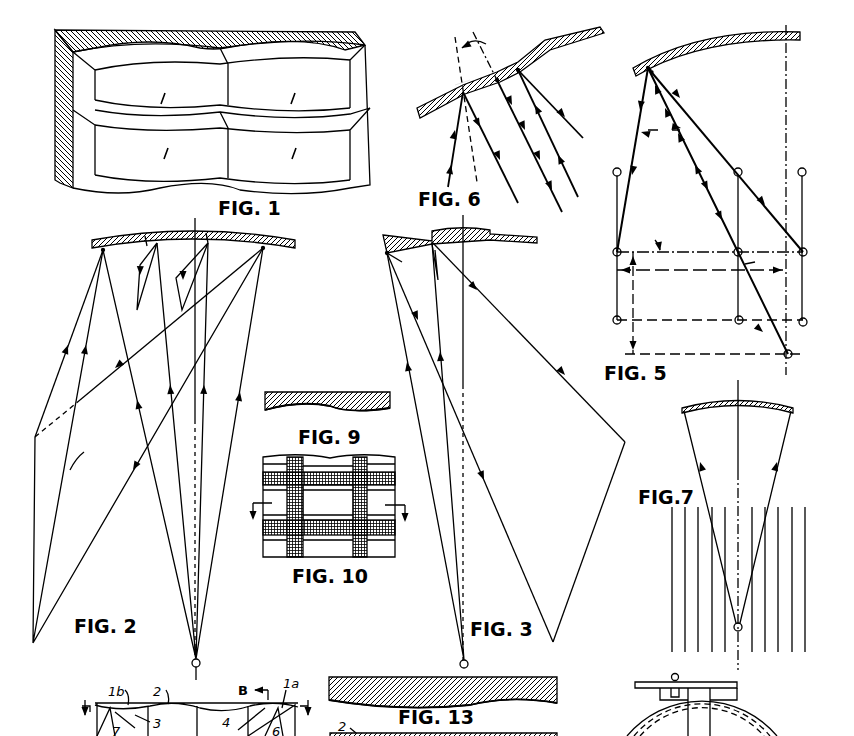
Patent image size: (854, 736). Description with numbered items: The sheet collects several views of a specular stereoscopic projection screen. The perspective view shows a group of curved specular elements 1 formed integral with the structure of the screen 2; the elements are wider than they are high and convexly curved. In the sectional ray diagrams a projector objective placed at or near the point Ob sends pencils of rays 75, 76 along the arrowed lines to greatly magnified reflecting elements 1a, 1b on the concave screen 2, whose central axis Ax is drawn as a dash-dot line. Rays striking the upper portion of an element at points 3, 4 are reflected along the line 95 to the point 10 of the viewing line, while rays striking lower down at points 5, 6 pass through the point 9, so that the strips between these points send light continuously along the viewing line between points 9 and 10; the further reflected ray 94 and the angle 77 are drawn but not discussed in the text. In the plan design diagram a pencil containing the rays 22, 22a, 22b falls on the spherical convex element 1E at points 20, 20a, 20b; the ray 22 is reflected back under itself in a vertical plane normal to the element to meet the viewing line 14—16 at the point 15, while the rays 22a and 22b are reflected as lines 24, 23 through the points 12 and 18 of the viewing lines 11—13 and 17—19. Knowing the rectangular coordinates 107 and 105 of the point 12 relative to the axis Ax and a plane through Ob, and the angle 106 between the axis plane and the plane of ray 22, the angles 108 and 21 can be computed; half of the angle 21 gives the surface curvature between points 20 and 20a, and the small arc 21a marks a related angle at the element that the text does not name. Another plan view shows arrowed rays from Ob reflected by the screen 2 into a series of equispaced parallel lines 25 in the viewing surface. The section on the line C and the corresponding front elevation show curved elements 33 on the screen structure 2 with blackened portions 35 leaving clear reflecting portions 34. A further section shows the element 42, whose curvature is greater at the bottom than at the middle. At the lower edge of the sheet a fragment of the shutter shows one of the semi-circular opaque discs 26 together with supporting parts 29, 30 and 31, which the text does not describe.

In FIG. 1, the curved specular element 1 is at (228, 126).
In FIG. 1, the screen 2 is at (58, 136).
In FIG. 6, the screen 2 is at (433, 100).
In FIG. 5, the screen 2 is at (705, 46).
In FIG. 2, the screen 2 is at (97, 240).
In FIG. 9, the screen 2 is at (356, 393).
In FIG. 3, the screen 2 is at (396, 234).
In FIG. 13, the screen 2 is at (380, 686).
In FIG. 7, the screen 2 is at (722, 414).
In FIG. 2, the curved reflecting element 1a is at (270, 252).
In FIG. 3, the curved reflecting element 1a is at (386, 256).
In FIG. 2, the curved reflecting element 1b is at (100, 252).
In FIG. 3, the curved reflecting element 1b is at (356, 297).
In FIG. 6, the element 1E is at (458, 88).
In FIG. 2, the point on upper portion of element 3 is at (133, 262).
In FIG. 3, the point on upper portion of element 3 is at (399, 255).
In FIG. 2, the point on upper portion of element 4 is at (246, 250).
In FIG. 3, the point on upper portion of element 4 is at (407, 269).
In FIG. 2, the point on lower portion of element 5 is at (121, 269).
In FIG. 3, the point on lower portion of element 5 is at (438, 262).
In FIG. 2, the point on lower portion of element 6 is at (237, 260).
In FIG. 3, the point on lower portion of element 6 is at (444, 281).
In FIG. 2, the point of viewing line 9 is at (34, 436).
In FIG. 3, the point of viewing line 9 is at (620, 442).
In FIG. 2, the point of viewing line 10 is at (33, 645).
In FIG. 3, the point of viewing line 10 is at (556, 642).
In FIG. 5, the central axis of the screen Ax is at (784, 100).
In FIG. 2, the central axis of the screen Ax is at (193, 346).
In FIG. 3, the central axis of the screen Ax is at (464, 364).
In FIG. 7, the central axis of the screen Ax is at (736, 458).
In FIG. 5, the projector objective point Ob is at (787, 358).
In FIG. 2, the projector objective point Ob is at (200, 662).
In FIG. 3, the projector objective point Ob is at (460, 661).
In FIG. 7, the projector objective point Ob is at (740, 632).
In FIG. 2, the pencil of rays 75 is at (138, 406).
In FIG. 2, the pencil of rays 76 is at (246, 354).
In FIG. 2, the angle between rays 77 is at (83, 460).
In FIG. 3, the ray to focal point 9 94 is at (554, 365).
In FIG. 3, the reflected ray line 95 is at (502, 514).
In FIG. 5, the viewing line end point 11 is at (616, 234).
In FIG. 5, the intersection point 12 is at (700, 252).
In FIG. 5, the viewing line end point 13 is at (700, 320).
In FIG. 5, the viewing line end point 14 is at (739, 234).
In FIG. 5, the intersection point 15 is at (747, 244).
In FIG. 5, the viewing line end point 16 is at (730, 313).
In FIG. 5, the viewing line end point 17 is at (803, 234).
In FIG. 5, the intersection point 18 is at (795, 259).
In FIG. 5, the viewing line end point 19 is at (804, 331).
In FIG. 6, the middle point of element 20 is at (487, 70).
In FIG. 5, the middle point of element 20 is at (652, 68).
In FIG. 6, the point on element 20a is at (458, 97).
In FIG. 5, the point on element 20a is at (655, 72).
In FIG. 6, the point on element 20b is at (522, 72).
In FIG. 5, the point on element 20b is at (658, 76).
In FIG. 6, the angle 21 is at (475, 152).
In FIG. 5, the angle 21 is at (661, 131).
In FIG. 6, the angle of incidence 21a is at (488, 41).
In FIG. 6, the ray 22 is at (532, 160).
In FIG. 5, the ray 22 is at (706, 178).
In FIG. 6, the ray 22a is at (526, 186).
In FIG. 5, the ray 22a is at (698, 195).
In FIG. 6, the ray 22b is at (565, 168).
In FIG. 5, the ray 22b is at (698, 209).
In FIG. 6, the reflected ray 23 is at (562, 104).
In FIG. 5, the reflected ray 23 is at (713, 140).
In FIG. 6, the reflected ray 24 is at (445, 155).
In FIG. 5, the reflected ray 24 is at (636, 170).
In FIG. 7, the parallel viewing lines 25 is at (710, 560).
In FIG. 7, the semi-circular opaque disc 26 is at (765, 734).
In FIG. 7, the mounting plate 29 is at (645, 682).
In FIG. 7, the bracket 30 is at (740, 694).
In FIG. 7, the bolt 31 is at (679, 680).
In FIG. 9, the curved element 33 is at (292, 412).
In FIG. 10, the curved element 33 is at (388, 485).
In FIG. 10, the clear portion 34 is at (328, 520).
In FIG. 10, the blackened portion 35 is at (396, 540).
In FIG. 13, the element 42 is at (484, 706).
In FIG. 5, the rectangular coordinate 105 is at (635, 312).
In FIG. 5, the angle 106 is at (764, 257).
In FIG. 5, the rectangular coordinate 107 is at (701, 271).
In FIG. 5, the angle 108 is at (652, 235).
In FIG. 10, the section line C is at (329, 521).